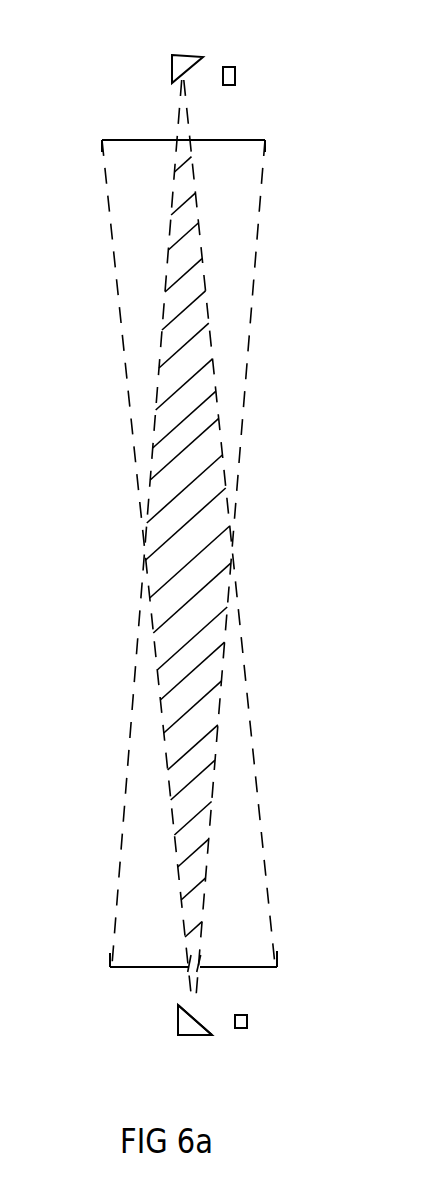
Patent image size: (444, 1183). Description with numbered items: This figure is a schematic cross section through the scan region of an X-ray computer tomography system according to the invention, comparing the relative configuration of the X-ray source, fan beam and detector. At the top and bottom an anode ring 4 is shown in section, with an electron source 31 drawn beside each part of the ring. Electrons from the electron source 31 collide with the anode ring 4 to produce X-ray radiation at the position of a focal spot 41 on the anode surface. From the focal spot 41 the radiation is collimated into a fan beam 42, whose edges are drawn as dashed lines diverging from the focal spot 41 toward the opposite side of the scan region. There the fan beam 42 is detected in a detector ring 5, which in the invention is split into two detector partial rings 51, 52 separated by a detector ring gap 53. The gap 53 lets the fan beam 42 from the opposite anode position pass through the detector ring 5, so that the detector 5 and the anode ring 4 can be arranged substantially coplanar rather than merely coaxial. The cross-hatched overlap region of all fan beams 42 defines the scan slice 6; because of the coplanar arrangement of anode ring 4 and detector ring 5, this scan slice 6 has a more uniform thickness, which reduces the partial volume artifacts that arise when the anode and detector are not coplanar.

The anode ring 4 is at (172, 55).
The electron source 31 is at (236, 72).
The detector ring 5 is at (150, 140).
The detector partial ring 51 is at (265, 142).
The detector partial ring 52 is at (123, 140).
The fan beam 42 is at (137, 638).
The scan slice 6 is at (193, 547).
The detector ring gap 53 is at (202, 965).
The focal spot 41 is at (197, 1013).